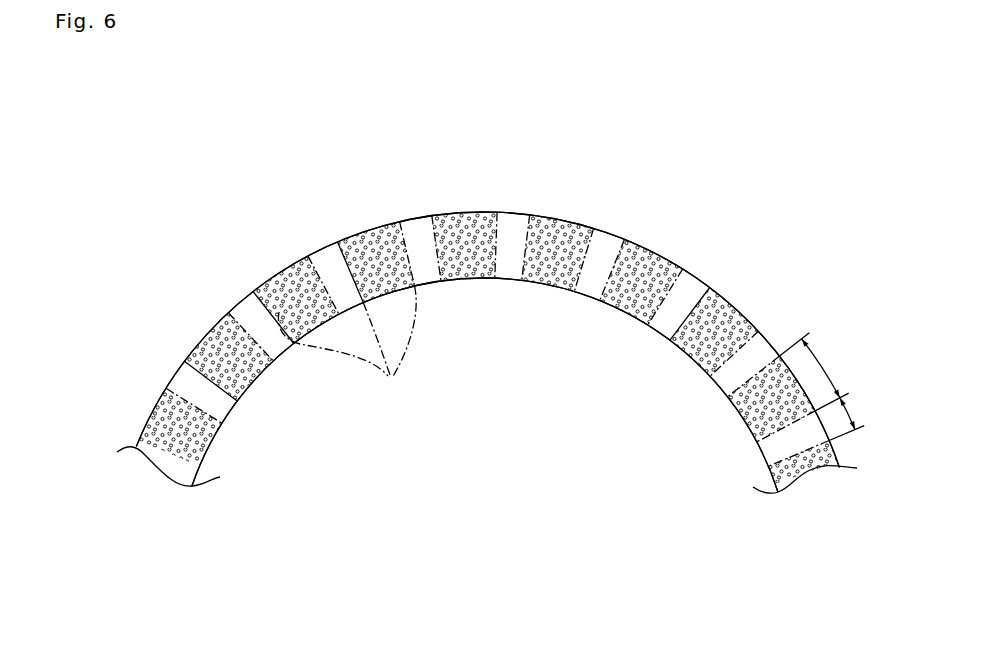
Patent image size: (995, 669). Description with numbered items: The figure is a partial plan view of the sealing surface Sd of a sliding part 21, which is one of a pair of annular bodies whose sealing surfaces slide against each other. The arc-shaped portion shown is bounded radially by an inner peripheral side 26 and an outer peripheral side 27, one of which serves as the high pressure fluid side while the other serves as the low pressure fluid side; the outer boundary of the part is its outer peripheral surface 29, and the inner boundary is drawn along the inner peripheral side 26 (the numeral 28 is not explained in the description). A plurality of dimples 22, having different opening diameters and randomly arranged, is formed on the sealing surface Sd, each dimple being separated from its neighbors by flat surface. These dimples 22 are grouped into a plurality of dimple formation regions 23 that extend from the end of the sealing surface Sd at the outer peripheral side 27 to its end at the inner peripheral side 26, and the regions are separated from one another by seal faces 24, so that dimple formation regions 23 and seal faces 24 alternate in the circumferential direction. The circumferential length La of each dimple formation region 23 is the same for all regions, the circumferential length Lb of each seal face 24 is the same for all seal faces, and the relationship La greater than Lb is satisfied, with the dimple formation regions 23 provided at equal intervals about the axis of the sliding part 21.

The sliding part 21 is at (495, 305).
The dimples 22 is at (485, 213).
The dimple formation regions 23 is at (725, 381).
The seal faces 24 is at (247, 308).
The inner peripheral side 26 is at (486, 446).
The outer peripheral side 27 is at (497, 140).
The inner peripheral surface 28 is at (235, 403).
The outer peripheral surface 29 is at (208, 333).
The sealing surface Sd is at (679, 290).
The circumferential length of dimple formation region La is at (814, 372).
The circumferential length of seal face Lb is at (851, 413).